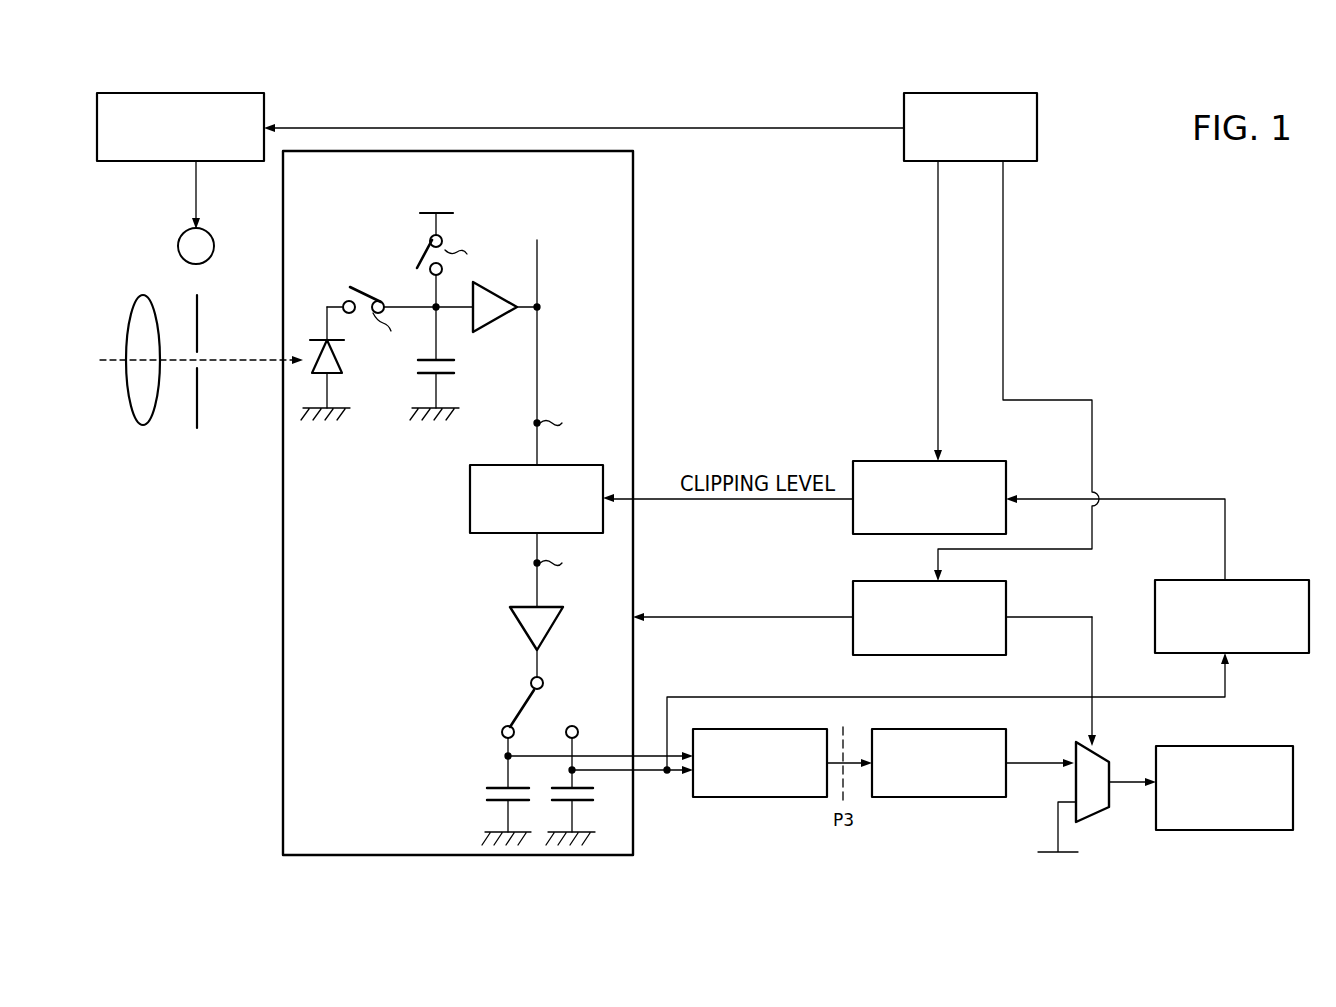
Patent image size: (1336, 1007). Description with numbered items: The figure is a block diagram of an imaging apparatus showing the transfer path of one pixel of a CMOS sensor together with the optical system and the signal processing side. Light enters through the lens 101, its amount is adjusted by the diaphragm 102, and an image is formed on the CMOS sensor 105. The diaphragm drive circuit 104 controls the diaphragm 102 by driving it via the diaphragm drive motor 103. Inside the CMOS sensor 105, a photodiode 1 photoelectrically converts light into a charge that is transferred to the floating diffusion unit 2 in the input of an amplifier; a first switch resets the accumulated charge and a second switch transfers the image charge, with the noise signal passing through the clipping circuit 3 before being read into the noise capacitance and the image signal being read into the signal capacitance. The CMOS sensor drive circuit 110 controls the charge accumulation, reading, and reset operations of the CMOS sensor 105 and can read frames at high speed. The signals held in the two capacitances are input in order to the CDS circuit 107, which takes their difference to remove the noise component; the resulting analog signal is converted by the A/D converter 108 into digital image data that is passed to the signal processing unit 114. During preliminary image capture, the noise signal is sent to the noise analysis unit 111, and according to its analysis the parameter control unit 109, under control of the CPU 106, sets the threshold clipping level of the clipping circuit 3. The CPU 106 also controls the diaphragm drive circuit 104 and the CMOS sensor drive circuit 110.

The lens 101 is at (150, 418).
The diaphragm 102 is at (197, 413).
The diaphragm drive motor 103 is at (214, 246).
The diaphragm drive circuit 104 is at (264, 105).
The CMOS sensor 105 is at (633, 160).
The central processing unit (CPU) 106 is at (1037, 128).
The correlated double sampling (CDS) circuit 107 is at (712, 798).
The A/D converter 108 is at (896, 798).
The parameter control unit 109 is at (892, 460).
The CMOS sensor drive circuit 110 is at (892, 580).
The noise analysis unit 111 is at (1268, 579).
The signal processing unit 114 is at (1268, 745).
The photodiode (PD) 1 is at (335, 378).
The floating diffusion unit (FD) 2 is at (450, 382).
The clipping circuit 3 is at (470, 498).